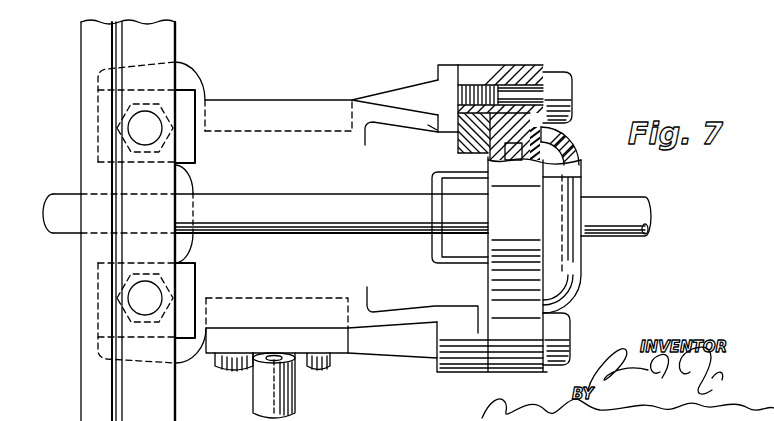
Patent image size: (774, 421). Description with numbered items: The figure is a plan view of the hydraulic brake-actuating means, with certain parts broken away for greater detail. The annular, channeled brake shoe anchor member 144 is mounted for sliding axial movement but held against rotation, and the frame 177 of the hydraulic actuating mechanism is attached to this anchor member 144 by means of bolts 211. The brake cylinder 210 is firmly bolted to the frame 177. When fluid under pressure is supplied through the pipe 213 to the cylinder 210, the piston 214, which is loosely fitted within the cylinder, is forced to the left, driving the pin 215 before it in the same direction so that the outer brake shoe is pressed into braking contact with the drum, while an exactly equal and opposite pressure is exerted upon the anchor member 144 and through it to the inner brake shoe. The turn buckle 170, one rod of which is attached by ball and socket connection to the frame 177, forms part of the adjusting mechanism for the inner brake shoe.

The brake shoe anchor member 144 is at (90, 50).
The bolts 211 is at (100, 145).
The frame 177 is at (316, 80).
The pin 215 is at (333, 208).
The piston 214 is at (538, 150).
The pipe 213 is at (630, 205).
The brake cylinder 210 is at (573, 270).
The turn buckle 170 is at (297, 396).